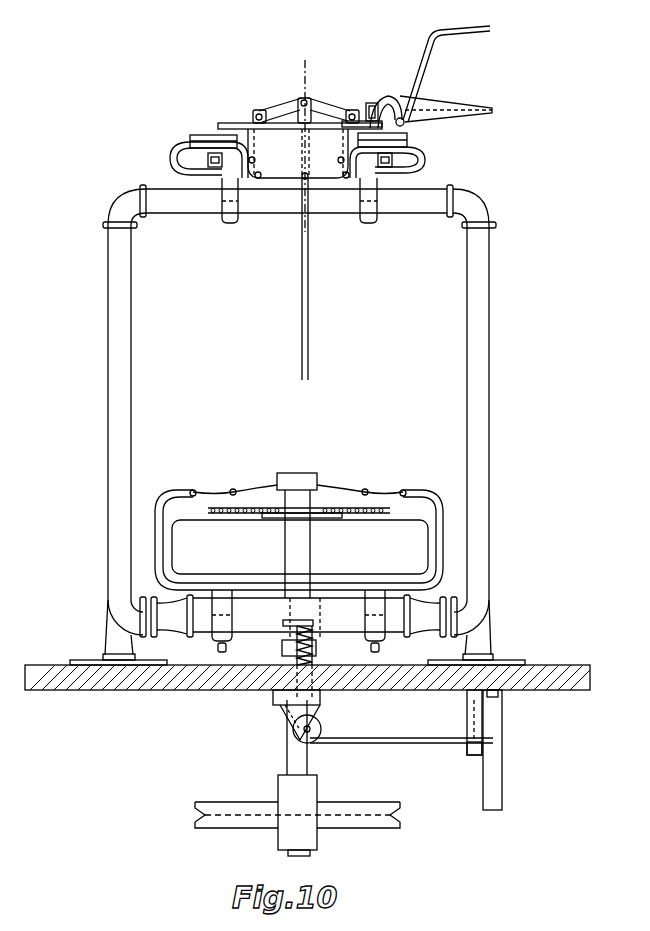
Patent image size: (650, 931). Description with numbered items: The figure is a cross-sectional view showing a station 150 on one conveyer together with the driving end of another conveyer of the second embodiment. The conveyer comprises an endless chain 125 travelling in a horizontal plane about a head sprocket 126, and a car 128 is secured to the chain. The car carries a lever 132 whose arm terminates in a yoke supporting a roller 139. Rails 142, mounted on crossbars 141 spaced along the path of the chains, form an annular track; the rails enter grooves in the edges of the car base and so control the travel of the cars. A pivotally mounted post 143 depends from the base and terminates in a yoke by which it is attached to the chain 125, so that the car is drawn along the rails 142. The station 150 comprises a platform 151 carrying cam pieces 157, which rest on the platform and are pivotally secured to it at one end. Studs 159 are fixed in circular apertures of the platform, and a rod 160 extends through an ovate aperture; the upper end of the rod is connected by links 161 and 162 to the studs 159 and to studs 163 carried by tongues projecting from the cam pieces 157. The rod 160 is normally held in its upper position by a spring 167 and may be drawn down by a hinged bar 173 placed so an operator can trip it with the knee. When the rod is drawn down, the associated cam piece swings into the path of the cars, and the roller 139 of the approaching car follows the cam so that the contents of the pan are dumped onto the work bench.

The endless chain 125 is at (388, 166).
The head sprocket 126 is at (367, 506).
The car 128 is at (424, 92).
The lever 132 is at (436, 52).
The roller 139 is at (300, 151).
The crossbar 141 is at (240, 180).
The rail 142 is at (233, 147).
The post 143 is at (395, 156).
The station 150 is at (232, 126).
The platform 151 is at (287, 137).
The cam piece 157 is at (390, 100).
The stud 159 is at (258, 112).
The rod 160 is at (309, 312).
The link 161 is at (270, 122).
The link 162 is at (328, 107).
The stud 163 is at (362, 118).
The spring 167 is at (290, 652).
The hinged bar 173 is at (490, 792).